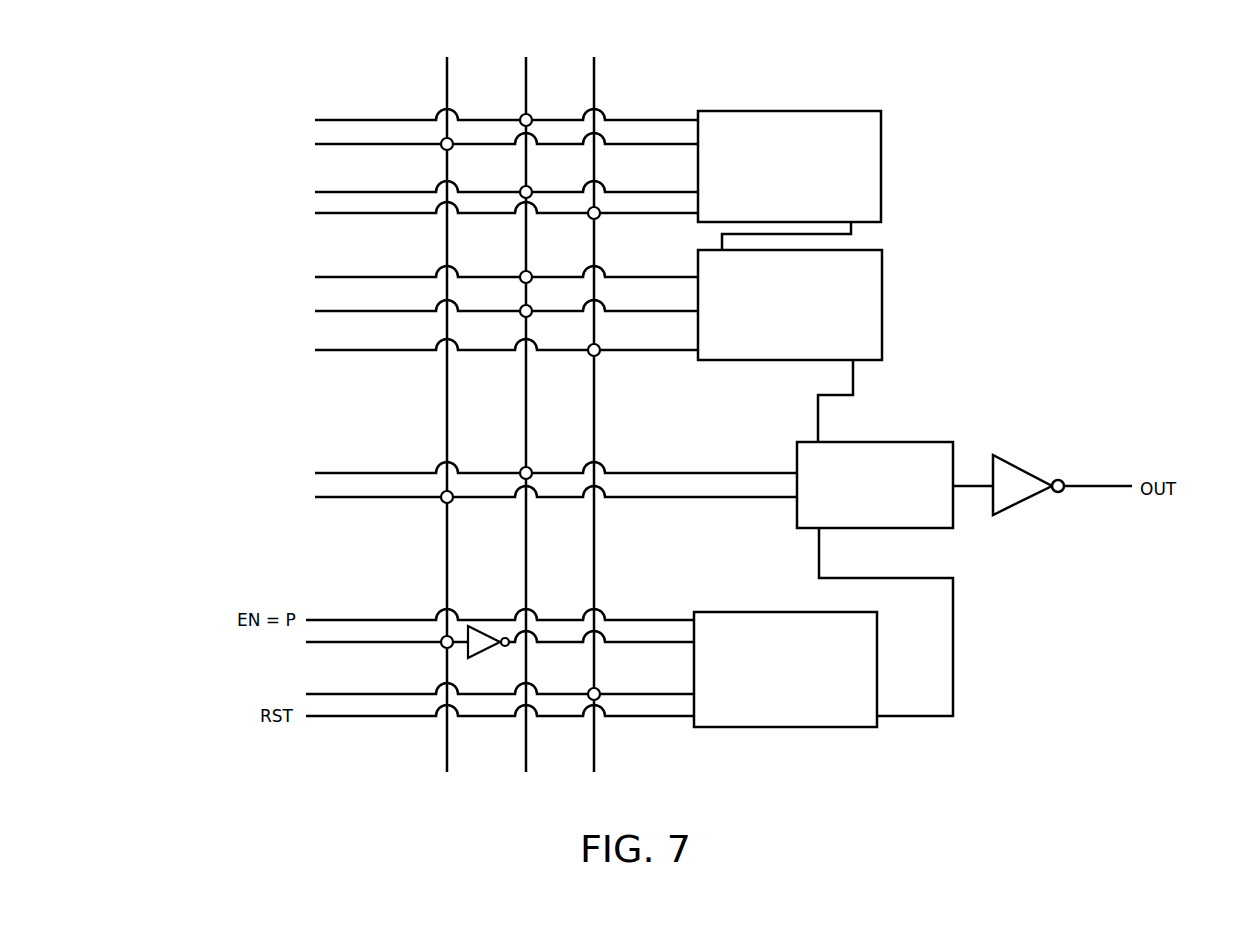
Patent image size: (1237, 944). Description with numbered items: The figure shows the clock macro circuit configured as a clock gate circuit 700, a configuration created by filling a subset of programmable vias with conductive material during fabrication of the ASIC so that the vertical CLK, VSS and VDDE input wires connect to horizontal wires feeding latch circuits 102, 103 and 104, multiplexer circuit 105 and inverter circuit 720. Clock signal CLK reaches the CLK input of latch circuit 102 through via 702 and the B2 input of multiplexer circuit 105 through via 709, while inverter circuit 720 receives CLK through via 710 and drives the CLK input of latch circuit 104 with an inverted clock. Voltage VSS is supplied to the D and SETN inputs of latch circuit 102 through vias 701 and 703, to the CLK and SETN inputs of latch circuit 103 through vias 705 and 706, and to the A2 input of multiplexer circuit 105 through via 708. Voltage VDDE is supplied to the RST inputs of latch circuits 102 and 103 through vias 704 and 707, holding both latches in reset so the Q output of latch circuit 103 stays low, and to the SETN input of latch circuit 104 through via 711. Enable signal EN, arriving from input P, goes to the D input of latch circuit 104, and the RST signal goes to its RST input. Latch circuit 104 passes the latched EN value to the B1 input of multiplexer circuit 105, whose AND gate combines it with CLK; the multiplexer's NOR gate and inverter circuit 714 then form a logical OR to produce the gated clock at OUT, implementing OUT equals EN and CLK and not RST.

The clock gate circuit 700 is at (290, 64).
The via 701 is at (530, 115).
The via 702 is at (451, 149).
The via 703 is at (530, 187).
The via 704 is at (598, 218).
The via 705 is at (530, 272).
The via 706 is at (530, 306).
The via 707 is at (598, 355).
The via 708 is at (530, 468).
The via 709 is at (451, 502).
The via 710 is at (442, 647).
The via 711 is at (598, 689).
The inverter circuit 714 is at (1020, 467).
The inverter circuit 720 is at (471, 655).
The latch circuit 102 is at (800, 111).
The latch circuit 103 is at (762, 360).
The latch circuit 104 is at (728, 612).
The multiplexer circuit 105 is at (905, 442).